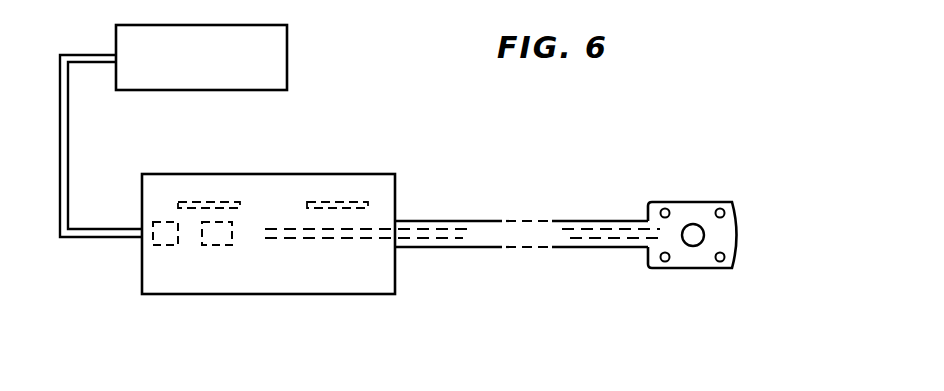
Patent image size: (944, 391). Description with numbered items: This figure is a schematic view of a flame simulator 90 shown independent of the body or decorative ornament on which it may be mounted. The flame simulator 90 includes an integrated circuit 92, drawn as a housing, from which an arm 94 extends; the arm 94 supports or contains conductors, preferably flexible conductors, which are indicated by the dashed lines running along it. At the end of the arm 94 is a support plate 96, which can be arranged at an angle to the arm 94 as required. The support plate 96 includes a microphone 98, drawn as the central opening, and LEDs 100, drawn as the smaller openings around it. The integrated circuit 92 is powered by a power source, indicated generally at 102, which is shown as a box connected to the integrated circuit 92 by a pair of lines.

The flame simulator 90 is at (398, 103).
The integrated circuit 92 is at (270, 178).
The arm 94 is at (458, 232).
The support plate 96 is at (705, 268).
The microphone 98 is at (698, 232).
The LEDs 100 is at (723, 255).
The power source 102 is at (218, 72).